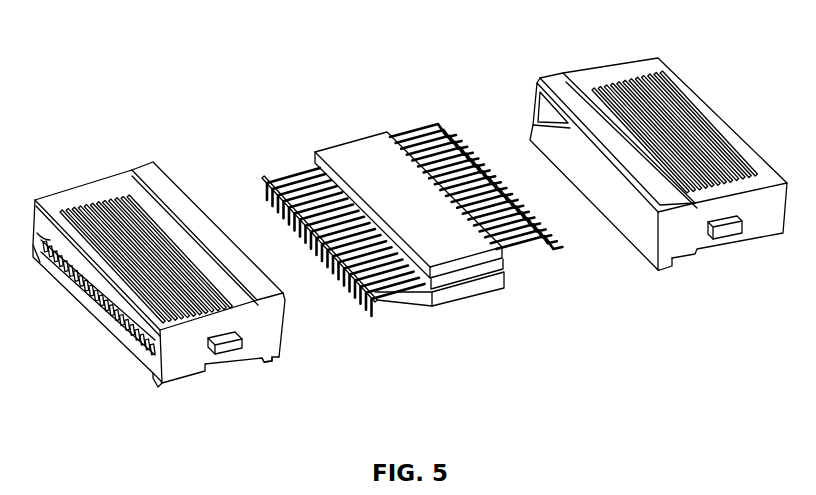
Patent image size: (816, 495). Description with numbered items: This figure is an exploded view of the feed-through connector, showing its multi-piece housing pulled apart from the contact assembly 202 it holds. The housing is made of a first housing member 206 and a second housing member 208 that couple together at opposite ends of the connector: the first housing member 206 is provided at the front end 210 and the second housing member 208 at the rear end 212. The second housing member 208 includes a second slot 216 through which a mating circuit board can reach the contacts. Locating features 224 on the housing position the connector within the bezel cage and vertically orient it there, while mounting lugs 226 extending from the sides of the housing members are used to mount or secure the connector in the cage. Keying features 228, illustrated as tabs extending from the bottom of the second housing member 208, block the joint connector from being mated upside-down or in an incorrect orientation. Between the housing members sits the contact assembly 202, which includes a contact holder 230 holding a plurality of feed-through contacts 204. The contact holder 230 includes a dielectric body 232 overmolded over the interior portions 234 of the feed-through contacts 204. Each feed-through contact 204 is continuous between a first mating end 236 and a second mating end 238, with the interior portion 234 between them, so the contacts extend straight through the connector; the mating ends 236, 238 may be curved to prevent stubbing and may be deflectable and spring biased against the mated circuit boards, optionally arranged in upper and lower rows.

The contact assembly 202 is at (432, 233).
The feed-through contacts 204 is at (435, 254).
The first housing member 206 is at (610, 68).
The second housing member 208 is at (154, 273).
The front end 210 is at (658, 145).
The rear end 212 is at (97, 316).
The second slot 216 is at (77, 283).
The locating features 224 is at (265, 358).
The mounting lugs 226 is at (222, 348).
The keying features 228 is at (153, 382).
The contact holder 230 is at (368, 147).
The dielectric body 232 is at (452, 284).
The interior portions 234 is at (483, 266).
The first mating end 236 is at (517, 250).
The second mating end 238 is at (378, 301).